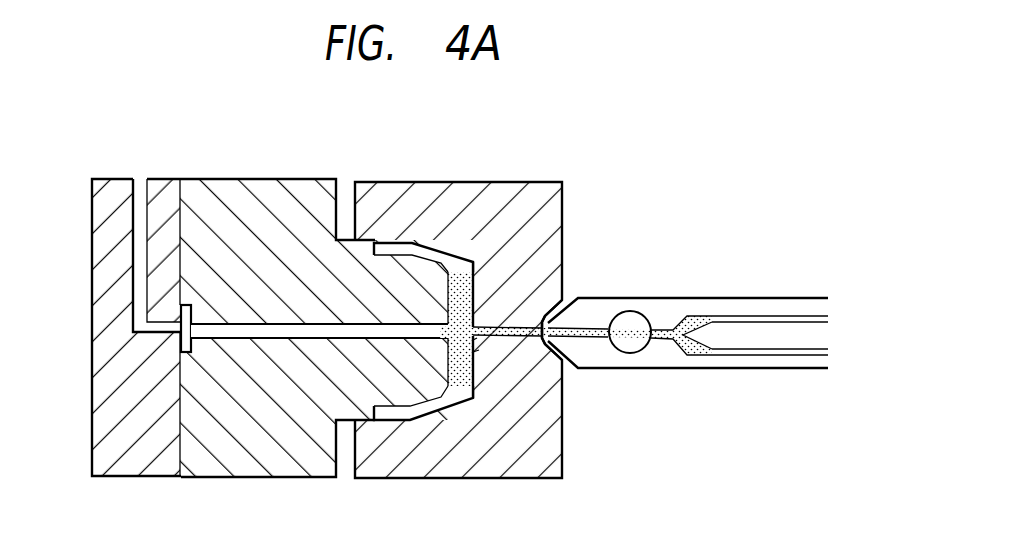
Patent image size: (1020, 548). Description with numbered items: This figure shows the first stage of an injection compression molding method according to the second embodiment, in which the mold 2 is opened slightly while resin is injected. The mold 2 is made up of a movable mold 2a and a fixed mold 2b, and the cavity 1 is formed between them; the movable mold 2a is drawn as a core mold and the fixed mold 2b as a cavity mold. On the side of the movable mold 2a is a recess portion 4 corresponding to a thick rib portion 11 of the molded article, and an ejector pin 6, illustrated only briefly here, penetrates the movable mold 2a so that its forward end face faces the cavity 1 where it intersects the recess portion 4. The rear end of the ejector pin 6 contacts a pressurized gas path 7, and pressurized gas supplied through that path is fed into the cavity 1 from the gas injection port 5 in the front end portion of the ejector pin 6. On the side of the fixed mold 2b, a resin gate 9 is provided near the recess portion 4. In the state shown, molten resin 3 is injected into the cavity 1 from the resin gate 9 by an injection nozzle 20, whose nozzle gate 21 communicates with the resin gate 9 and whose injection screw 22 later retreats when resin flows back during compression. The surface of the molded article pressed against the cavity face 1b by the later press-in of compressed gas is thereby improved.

The cavity 1 is at (450, 275).
The cavity face 1b is at (478, 264).
The mold 2 is at (354, 285).
The movable mold 2a is at (300, 198).
The fixed mold 2b is at (458, 306).
The molten resin 3 is at (479, 350).
The recess portion 4 is at (438, 268).
The gas injection port 5 is at (476, 318).
The ejector pin 6 is at (252, 322).
The pressurized gas path 7 is at (147, 185).
The resin gate 9 is at (566, 367).
The thick rib portion 11 is at (477, 338).
The injection nozzle 20 is at (688, 317).
The nozzle gate 21 is at (632, 309).
The injection screw 22 is at (757, 340).